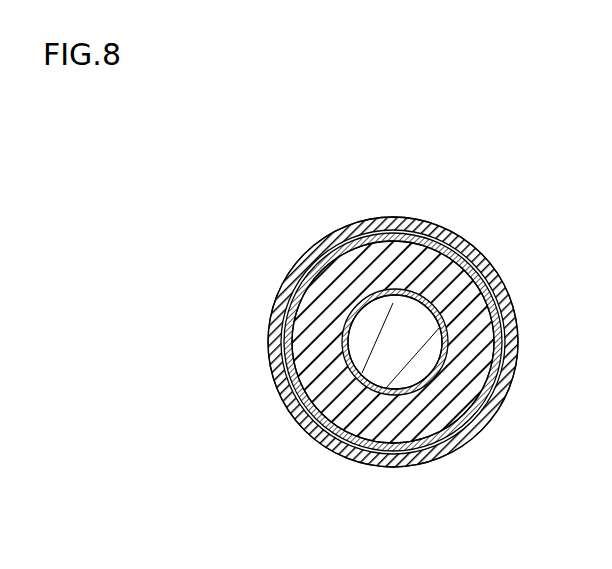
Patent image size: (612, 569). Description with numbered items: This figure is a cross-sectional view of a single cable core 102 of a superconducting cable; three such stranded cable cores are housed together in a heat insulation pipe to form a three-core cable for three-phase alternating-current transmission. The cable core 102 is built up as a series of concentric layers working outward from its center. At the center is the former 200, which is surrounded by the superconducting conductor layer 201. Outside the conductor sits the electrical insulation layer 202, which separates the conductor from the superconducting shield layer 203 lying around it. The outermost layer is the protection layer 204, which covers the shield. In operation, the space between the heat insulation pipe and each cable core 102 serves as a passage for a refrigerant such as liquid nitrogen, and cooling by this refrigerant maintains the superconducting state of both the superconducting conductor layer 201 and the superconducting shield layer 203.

The cable core 102 is at (334, 216).
The former 200 is at (385, 333).
The superconducting conductor layer 201 is at (342, 361).
The electrical insulation layer 202 is at (338, 393).
The superconducting shield layer 203 is at (348, 445).
The protection layer 204 is at (414, 463).